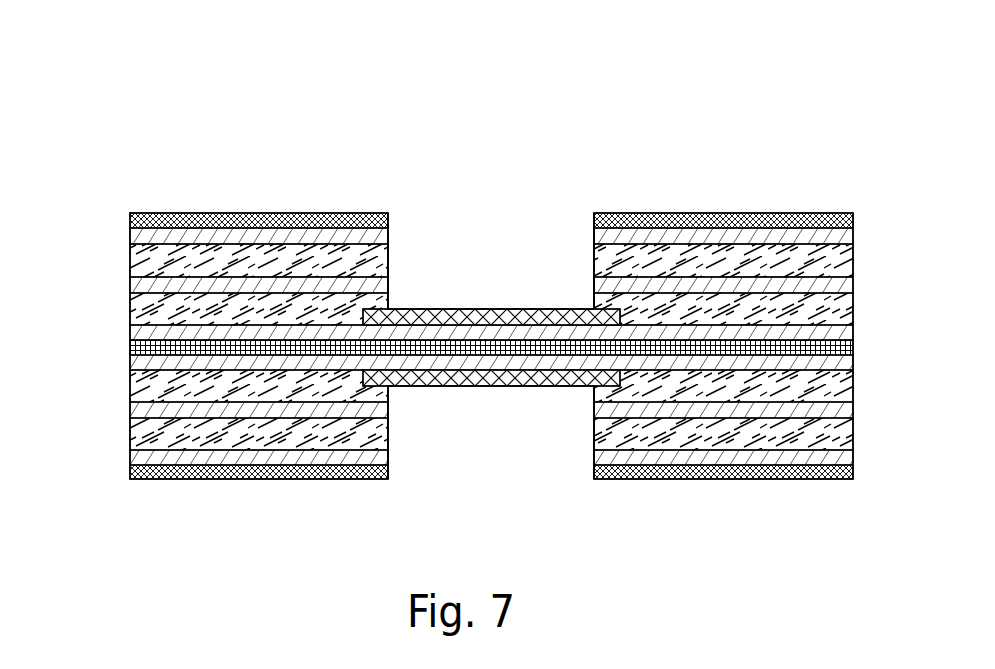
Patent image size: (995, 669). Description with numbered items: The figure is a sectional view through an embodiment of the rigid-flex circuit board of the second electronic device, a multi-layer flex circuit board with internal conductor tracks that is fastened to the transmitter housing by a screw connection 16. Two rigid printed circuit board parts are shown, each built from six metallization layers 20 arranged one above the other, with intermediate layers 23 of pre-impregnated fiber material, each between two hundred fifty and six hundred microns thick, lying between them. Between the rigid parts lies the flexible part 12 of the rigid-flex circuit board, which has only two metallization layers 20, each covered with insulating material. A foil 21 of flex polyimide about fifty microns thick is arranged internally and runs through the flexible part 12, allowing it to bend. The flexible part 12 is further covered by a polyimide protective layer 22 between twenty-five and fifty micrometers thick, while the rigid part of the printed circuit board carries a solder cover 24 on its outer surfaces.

The screw connection 16 is at (100, 111).
The flexible part 12 is at (517, 428).
The metallization layers 20 is at (137, 336).
The foil 21 is at (852, 343).
The polyimide protective layer 22 is at (505, 307).
The intermediate layers 23 is at (390, 304).
The solder cover 24 is at (245, 213).